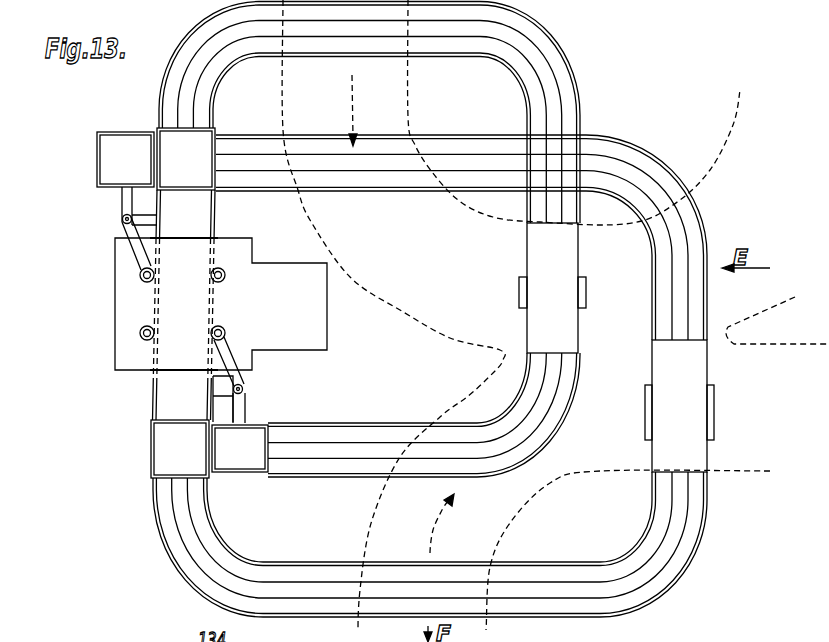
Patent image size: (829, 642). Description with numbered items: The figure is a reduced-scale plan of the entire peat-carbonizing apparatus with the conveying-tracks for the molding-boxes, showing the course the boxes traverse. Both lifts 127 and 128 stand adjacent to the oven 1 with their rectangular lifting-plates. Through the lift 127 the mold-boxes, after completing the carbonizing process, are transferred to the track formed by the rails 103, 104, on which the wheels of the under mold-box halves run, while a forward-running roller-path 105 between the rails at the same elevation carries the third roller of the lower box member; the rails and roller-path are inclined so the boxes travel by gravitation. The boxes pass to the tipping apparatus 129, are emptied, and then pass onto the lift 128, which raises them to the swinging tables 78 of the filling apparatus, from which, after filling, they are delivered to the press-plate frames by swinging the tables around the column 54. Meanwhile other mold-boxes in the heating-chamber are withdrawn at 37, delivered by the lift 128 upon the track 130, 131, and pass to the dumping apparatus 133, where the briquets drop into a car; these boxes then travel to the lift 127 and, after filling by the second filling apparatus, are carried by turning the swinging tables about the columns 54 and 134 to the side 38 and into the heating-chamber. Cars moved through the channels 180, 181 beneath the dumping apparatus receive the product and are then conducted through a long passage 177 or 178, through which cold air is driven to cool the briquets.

The oven 1 is at (221, 304).
The withdrawal side of the heating-chamber 37 is at (184, 370).
The delivery side of the heating-chamber 38 is at (184, 236).
The column 54 is at (243, 389).
The swinging table 78 is at (182, 302).
The track-rail 103 is at (224, 18).
The track-rail 104 is at (332, 423).
The roller-path 105 is at (374, 13).
The lift 127 is at (186, 159).
The lift 128 is at (180, 449).
The tipping apparatus 129 is at (520, 300).
The track-rail 130 is at (296, 621).
The track-rail 131 is at (324, 187).
The dumping apparatus 133 is at (713, 406).
The column 134 is at (122, 219).
The passage 177 is at (574, 112).
The passage 178 is at (708, 467).
The channel 180 is at (456, 523).
The channel 181 is at (393, 315).